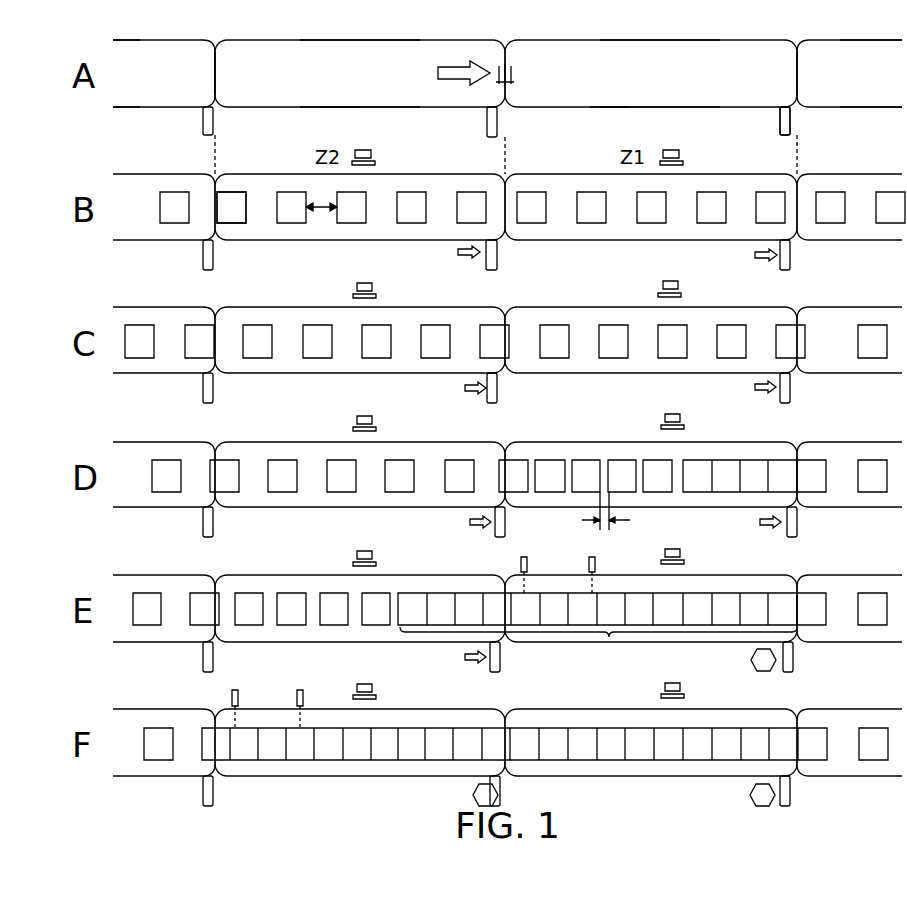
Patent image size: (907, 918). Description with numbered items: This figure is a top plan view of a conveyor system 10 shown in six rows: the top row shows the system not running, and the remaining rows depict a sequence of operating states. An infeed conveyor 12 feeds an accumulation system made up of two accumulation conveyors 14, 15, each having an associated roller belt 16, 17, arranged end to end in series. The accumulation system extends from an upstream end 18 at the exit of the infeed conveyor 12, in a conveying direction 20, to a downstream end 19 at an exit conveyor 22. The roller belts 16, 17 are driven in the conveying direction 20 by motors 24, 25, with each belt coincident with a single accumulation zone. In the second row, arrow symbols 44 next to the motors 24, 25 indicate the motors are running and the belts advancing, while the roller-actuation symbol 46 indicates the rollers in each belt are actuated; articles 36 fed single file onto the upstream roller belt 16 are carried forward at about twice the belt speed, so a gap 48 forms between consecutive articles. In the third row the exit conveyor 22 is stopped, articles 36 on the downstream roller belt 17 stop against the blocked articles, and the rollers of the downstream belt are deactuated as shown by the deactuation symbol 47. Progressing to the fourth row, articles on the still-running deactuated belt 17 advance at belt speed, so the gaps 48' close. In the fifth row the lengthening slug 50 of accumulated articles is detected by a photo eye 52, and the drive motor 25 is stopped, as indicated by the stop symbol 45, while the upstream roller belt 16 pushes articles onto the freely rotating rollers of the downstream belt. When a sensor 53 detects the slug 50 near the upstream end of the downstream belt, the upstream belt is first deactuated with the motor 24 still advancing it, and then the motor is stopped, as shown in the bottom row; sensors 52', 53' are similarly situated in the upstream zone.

The conveyor system 10 is at (108, 127).
The infeed conveyor 12 is at (170, 83).
The accumulation conveyor 14 is at (378, 88).
The accumulation conveyor 15 is at (685, 88).
The roller belt 16 is at (344, 105).
The roller belt 17 is at (613, 104).
The upstream end 18 is at (217, 82).
The downstream end 19 is at (797, 78).
The conveying direction 20 is at (452, 72).
The exit conveyor 22 is at (868, 88).
The motor 24 is at (497, 130).
The motor 25 is at (778, 130).
The articles 36 is at (235, 214).
The arrow symbols 44 is at (464, 255).
The stop symbol 45 is at (766, 665).
The roller-actuation symbol 46 is at (372, 153).
The deactuation symbol 47 is at (678, 284).
The gap 48 is at (326, 237).
The gaps 48' is at (596, 524).
The slug 50 is at (598, 646).
The photo eye 52 is at (611, 572).
The sensor 52' is at (318, 705).
The sensor 53 is at (507, 573).
The sensor 53' is at (254, 706).